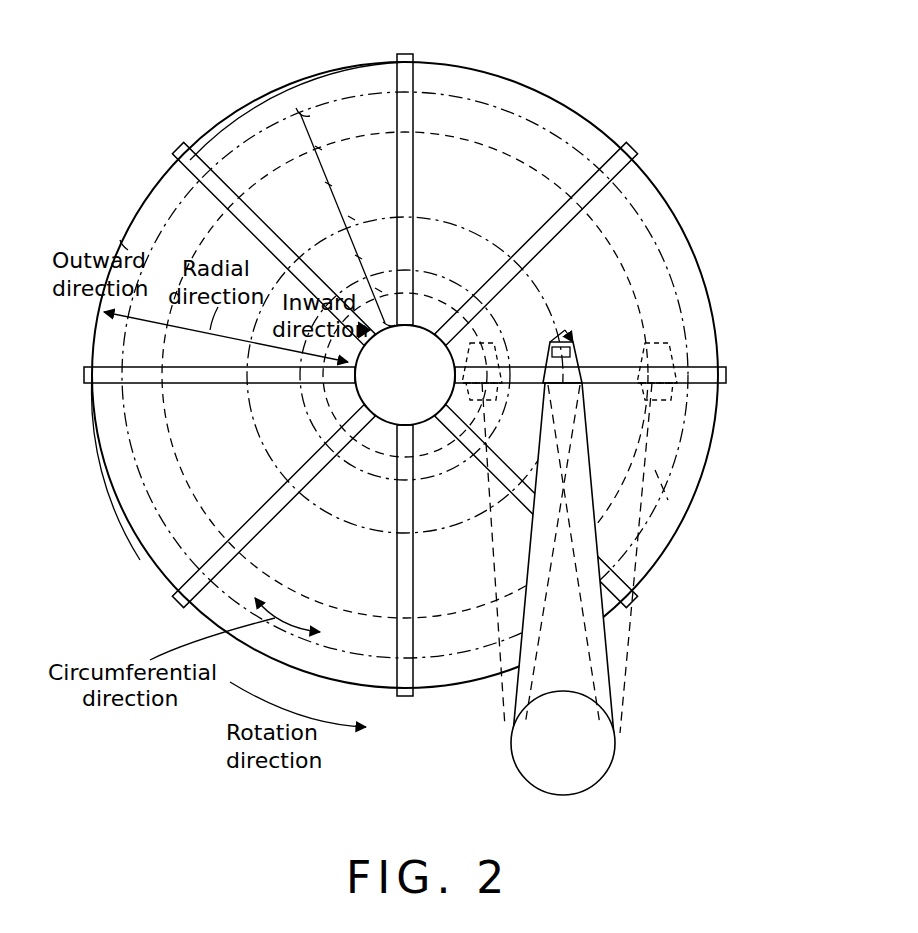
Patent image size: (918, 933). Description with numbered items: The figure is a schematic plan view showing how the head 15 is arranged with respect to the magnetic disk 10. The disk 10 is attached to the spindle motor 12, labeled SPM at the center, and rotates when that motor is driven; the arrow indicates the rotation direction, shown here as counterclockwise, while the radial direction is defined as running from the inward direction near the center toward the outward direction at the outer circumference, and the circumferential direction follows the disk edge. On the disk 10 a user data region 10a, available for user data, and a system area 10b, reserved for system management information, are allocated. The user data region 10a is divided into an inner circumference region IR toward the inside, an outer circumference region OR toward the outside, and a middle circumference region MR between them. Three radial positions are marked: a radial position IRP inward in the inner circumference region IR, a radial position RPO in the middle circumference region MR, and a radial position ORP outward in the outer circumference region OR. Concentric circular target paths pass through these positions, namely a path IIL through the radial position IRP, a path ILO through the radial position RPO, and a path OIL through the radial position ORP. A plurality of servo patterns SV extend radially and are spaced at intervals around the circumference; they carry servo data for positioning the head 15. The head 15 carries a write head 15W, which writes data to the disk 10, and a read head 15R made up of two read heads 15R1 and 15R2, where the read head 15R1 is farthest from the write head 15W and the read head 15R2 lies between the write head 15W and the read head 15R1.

The magnetic disk 10 is at (548, 92).
The user data region 10a is at (272, 152).
The system area 10b is at (110, 468).
The spindle motor 12 is at (425, 304).
The head 15 is at (548, 364).
The write head 15W is at (567, 338).
The read head 15R is at (628, 378).
The read head 15R1 is at (668, 500).
The read head 15R2 is at (672, 228).
The servo pattern SV is at (407, 52).
The spindle motor SPM is at (405, 375).
The outer circumference region OR is at (345, 217).
The middle circumference region MR is at (377, 214).
The inner circumference region IR is at (392, 288).
The path OIL is at (607, 236).
The path IIL is at (428, 290).
The path ILO is at (470, 230).
The radial position RPO is at (565, 338).
The radial position IRP is at (487, 338).
The radial position ORP is at (650, 326).